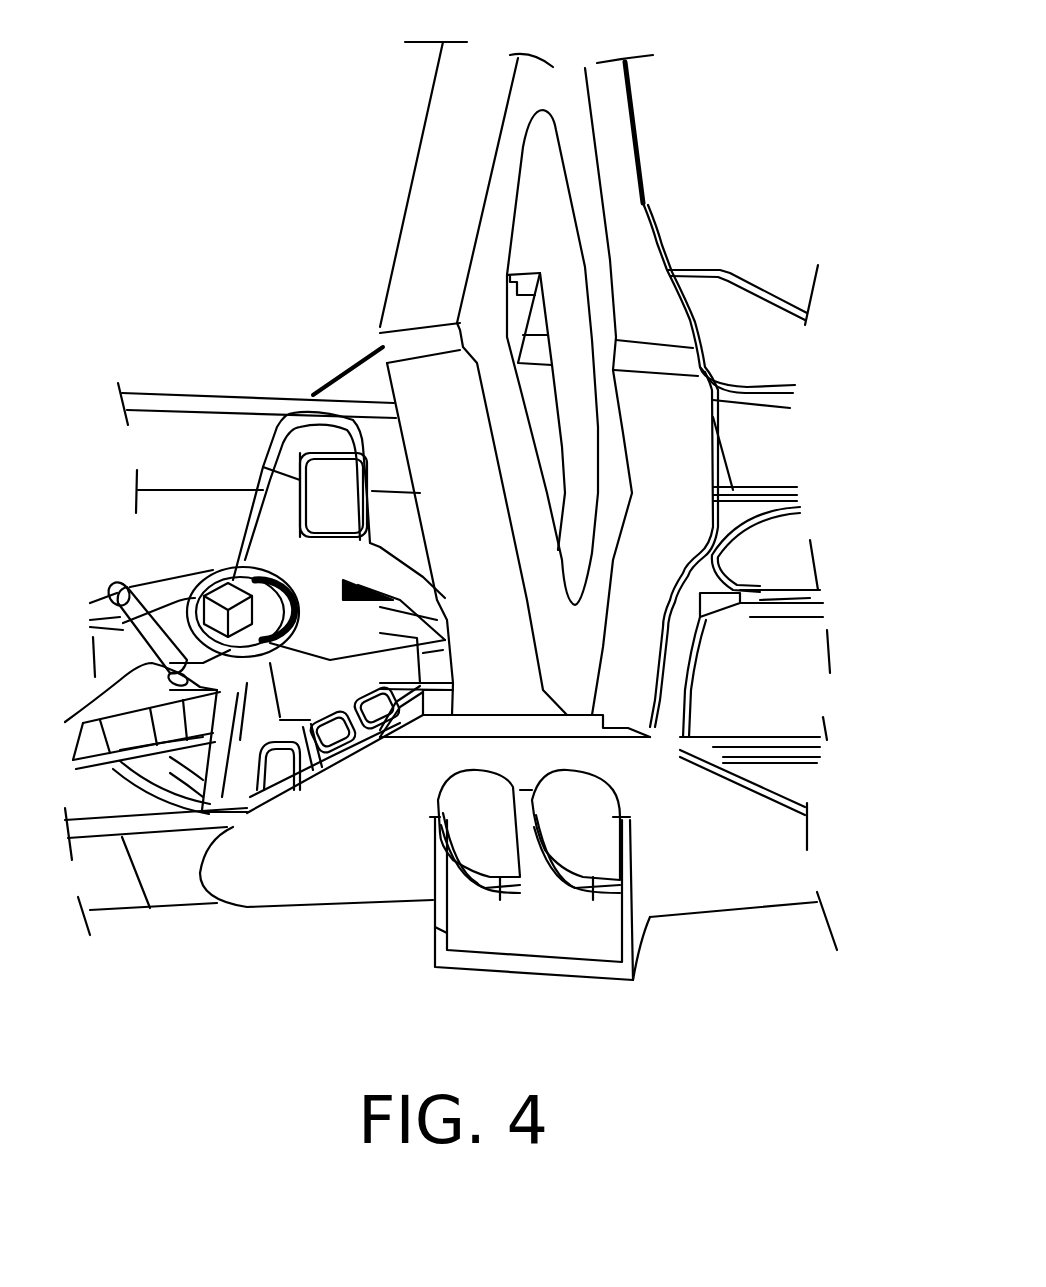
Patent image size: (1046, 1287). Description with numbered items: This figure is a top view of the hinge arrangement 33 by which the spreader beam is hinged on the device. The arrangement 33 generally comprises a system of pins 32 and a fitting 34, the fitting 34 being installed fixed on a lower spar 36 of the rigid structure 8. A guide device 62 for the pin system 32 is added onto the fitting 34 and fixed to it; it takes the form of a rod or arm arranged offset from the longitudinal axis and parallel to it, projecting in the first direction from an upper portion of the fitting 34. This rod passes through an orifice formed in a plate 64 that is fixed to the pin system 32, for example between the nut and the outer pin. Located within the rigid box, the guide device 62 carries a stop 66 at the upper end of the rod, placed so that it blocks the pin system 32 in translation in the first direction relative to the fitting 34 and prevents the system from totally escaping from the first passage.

The rigid structure 8 is at (640, 147).
The pin system 32 is at (220, 594).
The arrangement 33 is at (138, 785).
The fitting 34 is at (267, 550).
The lower spar 36 is at (773, 683).
The guide device 62 is at (123, 627).
The plate 64 is at (88, 713).
The stop 66 is at (118, 583).